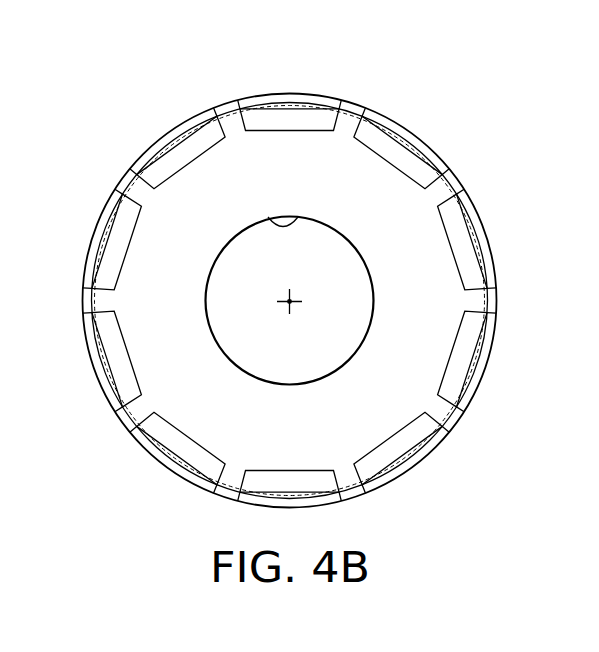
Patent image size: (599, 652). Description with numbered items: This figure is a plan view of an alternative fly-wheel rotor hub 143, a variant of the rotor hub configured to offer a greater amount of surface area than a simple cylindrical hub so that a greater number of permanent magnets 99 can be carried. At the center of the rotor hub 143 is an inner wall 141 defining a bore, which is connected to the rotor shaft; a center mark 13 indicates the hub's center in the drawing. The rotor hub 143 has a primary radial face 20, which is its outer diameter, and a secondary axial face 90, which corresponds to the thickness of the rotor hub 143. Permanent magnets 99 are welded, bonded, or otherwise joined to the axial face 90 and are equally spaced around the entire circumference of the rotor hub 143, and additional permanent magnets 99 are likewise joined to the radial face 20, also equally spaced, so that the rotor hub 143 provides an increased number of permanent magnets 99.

The fly-wheel rotor hub 143 is at (178, 87).
The inner wall 141 is at (300, 216).
The center axis 13 is at (292, 297).
The permanent magnets 99 is at (100, 333).
The secondary axial face 90 is at (102, 398).
The primary radial face 20 is at (191, 388).